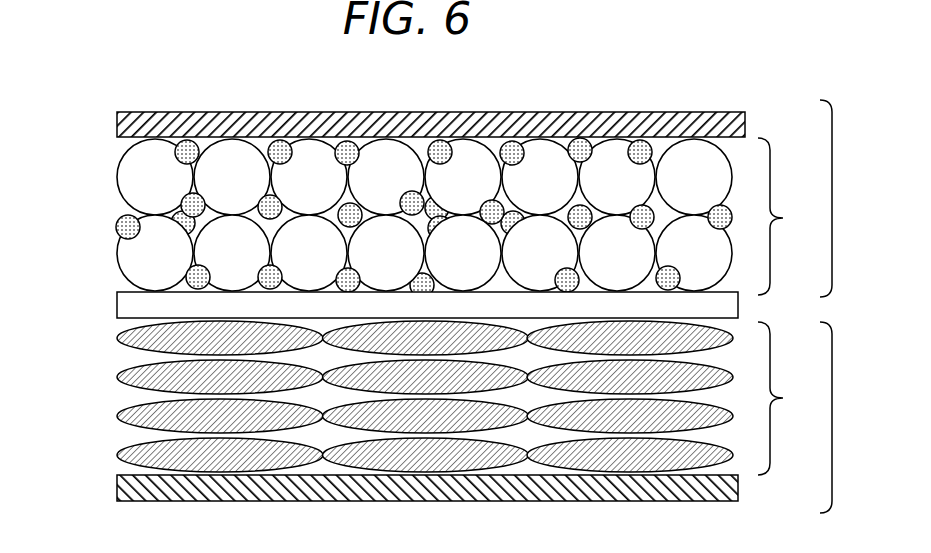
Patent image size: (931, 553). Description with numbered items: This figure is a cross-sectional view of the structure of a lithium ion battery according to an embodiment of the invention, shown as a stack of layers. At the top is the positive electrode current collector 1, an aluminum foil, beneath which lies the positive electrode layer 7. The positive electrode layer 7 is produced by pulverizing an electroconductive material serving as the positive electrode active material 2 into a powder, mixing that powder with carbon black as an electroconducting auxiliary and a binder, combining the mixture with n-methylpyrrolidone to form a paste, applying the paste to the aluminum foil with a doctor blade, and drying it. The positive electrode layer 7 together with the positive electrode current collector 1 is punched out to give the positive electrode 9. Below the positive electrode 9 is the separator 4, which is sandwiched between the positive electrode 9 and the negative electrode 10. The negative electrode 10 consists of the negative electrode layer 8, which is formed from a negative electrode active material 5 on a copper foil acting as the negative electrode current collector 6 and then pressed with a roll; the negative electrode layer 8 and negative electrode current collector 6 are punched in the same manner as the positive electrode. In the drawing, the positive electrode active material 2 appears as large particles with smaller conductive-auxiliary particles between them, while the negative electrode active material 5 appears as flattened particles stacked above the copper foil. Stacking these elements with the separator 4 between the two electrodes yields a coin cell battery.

The positive electrode current collector 1 is at (118, 118).
The positive electrode active material 2 is at (130, 177).
The separator 4 is at (125, 305).
The negative electrode active material 5 is at (127, 378).
The negative electrode current collector 6 is at (125, 480).
The positive electrode layer 7 is at (781, 216).
The negative electrode layer 8 is at (781, 398).
The positive electrode 9 is at (837, 198).
The negative electrode 10 is at (843, 417).